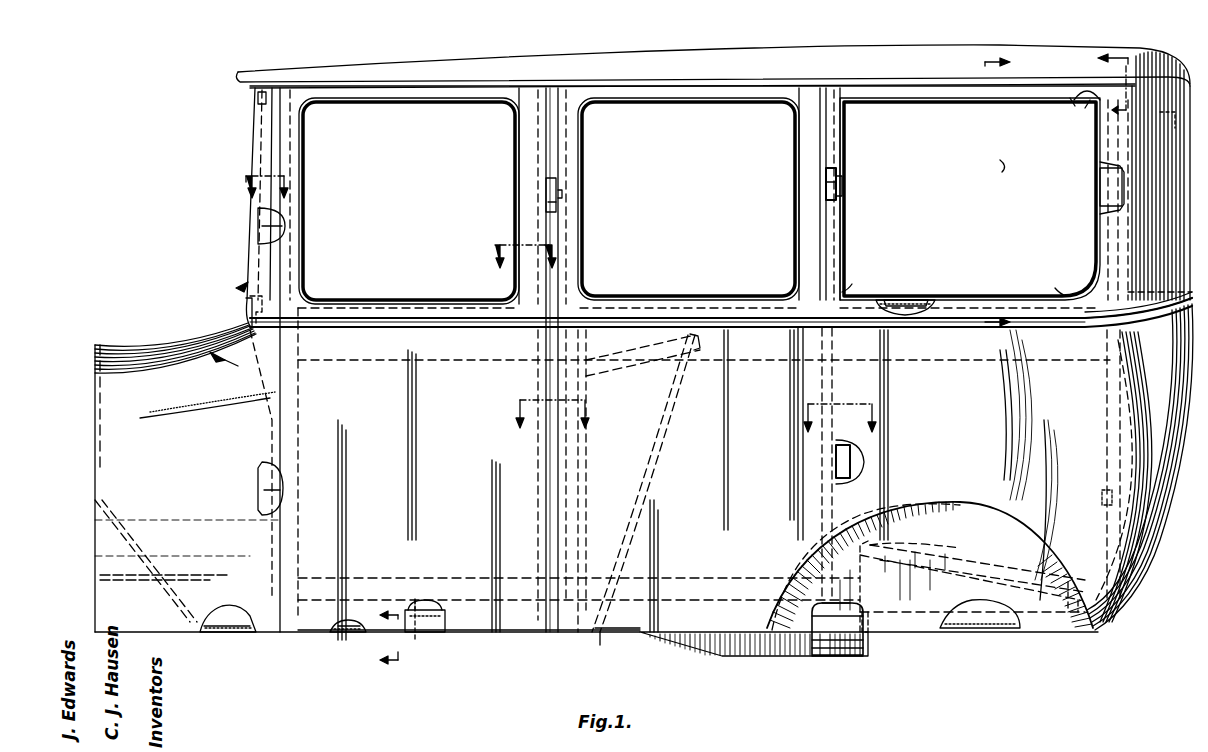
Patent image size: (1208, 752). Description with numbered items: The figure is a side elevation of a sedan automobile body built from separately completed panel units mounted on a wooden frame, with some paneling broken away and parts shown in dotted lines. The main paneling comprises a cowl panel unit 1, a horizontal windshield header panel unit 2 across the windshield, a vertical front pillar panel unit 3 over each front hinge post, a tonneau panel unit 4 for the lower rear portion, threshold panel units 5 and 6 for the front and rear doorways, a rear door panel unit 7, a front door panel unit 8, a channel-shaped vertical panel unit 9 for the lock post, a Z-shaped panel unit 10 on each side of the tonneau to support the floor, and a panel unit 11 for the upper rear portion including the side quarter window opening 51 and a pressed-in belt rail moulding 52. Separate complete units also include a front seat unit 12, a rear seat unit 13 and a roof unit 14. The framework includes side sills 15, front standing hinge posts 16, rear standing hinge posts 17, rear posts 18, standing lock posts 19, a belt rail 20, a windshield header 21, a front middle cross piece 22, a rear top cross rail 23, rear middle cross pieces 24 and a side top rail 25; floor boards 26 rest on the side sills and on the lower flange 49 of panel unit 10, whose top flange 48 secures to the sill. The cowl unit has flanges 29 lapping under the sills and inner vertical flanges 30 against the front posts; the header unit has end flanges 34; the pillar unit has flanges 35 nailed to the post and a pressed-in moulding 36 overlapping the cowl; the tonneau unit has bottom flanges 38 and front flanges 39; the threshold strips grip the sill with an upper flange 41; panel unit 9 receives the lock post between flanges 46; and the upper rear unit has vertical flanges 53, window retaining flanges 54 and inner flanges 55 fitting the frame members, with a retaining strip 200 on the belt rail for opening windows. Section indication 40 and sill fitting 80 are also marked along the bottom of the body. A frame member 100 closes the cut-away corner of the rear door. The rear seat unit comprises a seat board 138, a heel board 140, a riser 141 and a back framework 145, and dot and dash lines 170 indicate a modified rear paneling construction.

The cowl panel unit 1 is at (128, 458).
The horizontal windshield header panel unit 2 is at (258, 106).
The vertical front pillar panel unit 3 is at (262, 258).
The tonneau panel unit 4 is at (1160, 452).
The threshold panel unit 5 is at (506, 642).
The threshold panel unit 6 is at (608, 642).
The rear door panel unit 7 is at (700, 486).
The front door panel unit 8 is at (372, 438).
The vertical panel unit for standing lock post 9 is at (548, 151).
The panel unit for tonneau floor boards 10 is at (752, 646).
The panel unit for upper rear portion of body 11 is at (1168, 215).
The front seat unit 12 is at (628, 546).
The rear seat unit 13 is at (1066, 586).
The roof unit 14 is at (748, 60).
The side sill 15 is at (246, 630).
The front standing hinge post 16 is at (262, 224).
The rear standing hinge post 17 is at (826, 190).
The rear post 18 is at (1110, 204).
The standing lock post 19 is at (548, 196).
The belt rail 20 is at (912, 298).
The front top cross rail or windshield header 21 is at (256, 94).
The front middle cross piece 22 is at (246, 302).
The rear top cross rail 23 is at (846, 190).
The rear middle cross piece 24 is at (1175, 292).
The side top rail 25 is at (1086, 96).
The floor boards 26 is at (850, 656).
The flange 29 is at (226, 636).
The inner vertical flange 30 is at (268, 506).
The end flange 34 is at (241, 432).
The flange 35 is at (270, 240).
The pressed-in moulding 36 is at (222, 320).
The bottom flange 38 is at (958, 650).
The front vertically extending flange 39 is at (836, 452).
The section line 40 is at (397, 634).
The upper flange 41 is at (832, 464).
The flanges 46 is at (546, 186).
The top flange 48 is at (837, 619).
The lower flange 49 is at (812, 680).
The side quarter window opening 51 is at (1008, 157).
The pressed-in belt rail moulding 52 is at (1184, 318).
The vertical flange 53 is at (826, 178).
The window retaining shoulder or flange 54 is at (848, 152).
The flange 55 is at (838, 184).
The bracket 80 is at (340, 636).
The frame member 100 is at (790, 566).
The rear seat board or stool 138 is at (900, 546).
The rear seat heel board 140 is at (866, 580).
The riser 141 is at (1085, 600).
The back framework 145 is at (1130, 468).
The dot and dash lines 170 is at (966, 197).
The retaining strip 200 is at (901, 290).